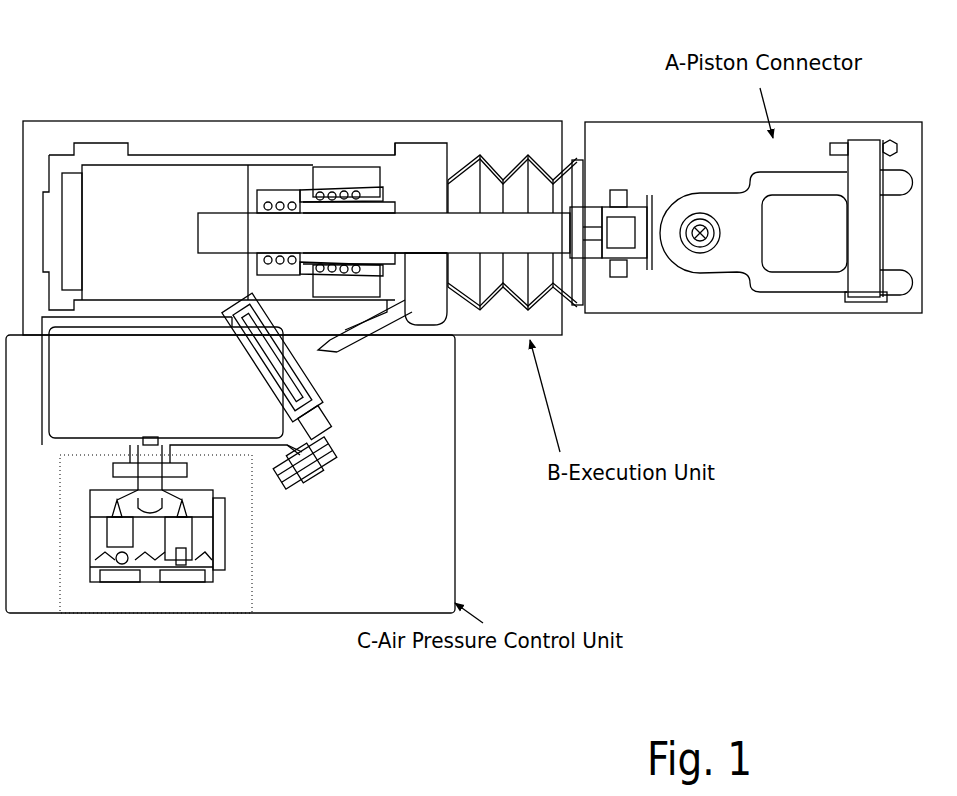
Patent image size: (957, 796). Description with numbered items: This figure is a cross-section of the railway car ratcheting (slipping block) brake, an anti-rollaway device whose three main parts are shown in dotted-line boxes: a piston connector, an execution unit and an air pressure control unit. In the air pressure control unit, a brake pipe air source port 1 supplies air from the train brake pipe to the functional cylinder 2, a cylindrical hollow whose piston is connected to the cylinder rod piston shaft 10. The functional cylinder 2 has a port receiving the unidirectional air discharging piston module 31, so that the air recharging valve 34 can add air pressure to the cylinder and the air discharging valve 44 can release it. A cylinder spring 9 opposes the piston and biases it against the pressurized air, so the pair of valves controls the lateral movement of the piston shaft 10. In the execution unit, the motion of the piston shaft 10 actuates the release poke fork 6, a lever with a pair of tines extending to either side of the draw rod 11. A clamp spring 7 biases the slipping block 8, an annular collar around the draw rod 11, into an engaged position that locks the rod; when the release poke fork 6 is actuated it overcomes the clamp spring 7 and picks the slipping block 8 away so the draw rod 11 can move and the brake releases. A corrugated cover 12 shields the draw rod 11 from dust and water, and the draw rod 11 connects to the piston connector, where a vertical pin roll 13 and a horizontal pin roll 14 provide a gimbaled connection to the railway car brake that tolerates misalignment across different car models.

The brake pipe air source port 1 is at (225, 557).
The functional cylinder 2 is at (145, 386).
The release poke fork 6 is at (415, 300).
The clamp spring 7 is at (271, 205).
The slipping block 8 is at (362, 207).
The cylinder spring 9 is at (335, 375).
The cylinder rod piston shaft 10 is at (352, 337).
The draw rod 11 is at (528, 235).
The corrugated cover 12 is at (573, 183).
The vertical pin roll 13 is at (866, 300).
The horizontal pin roll 14 is at (704, 242).
The unidirectional air discharging piston module 31 is at (90, 517).
The air recharging valve 34 is at (180, 572).
The air discharging valve 44 is at (120, 562).